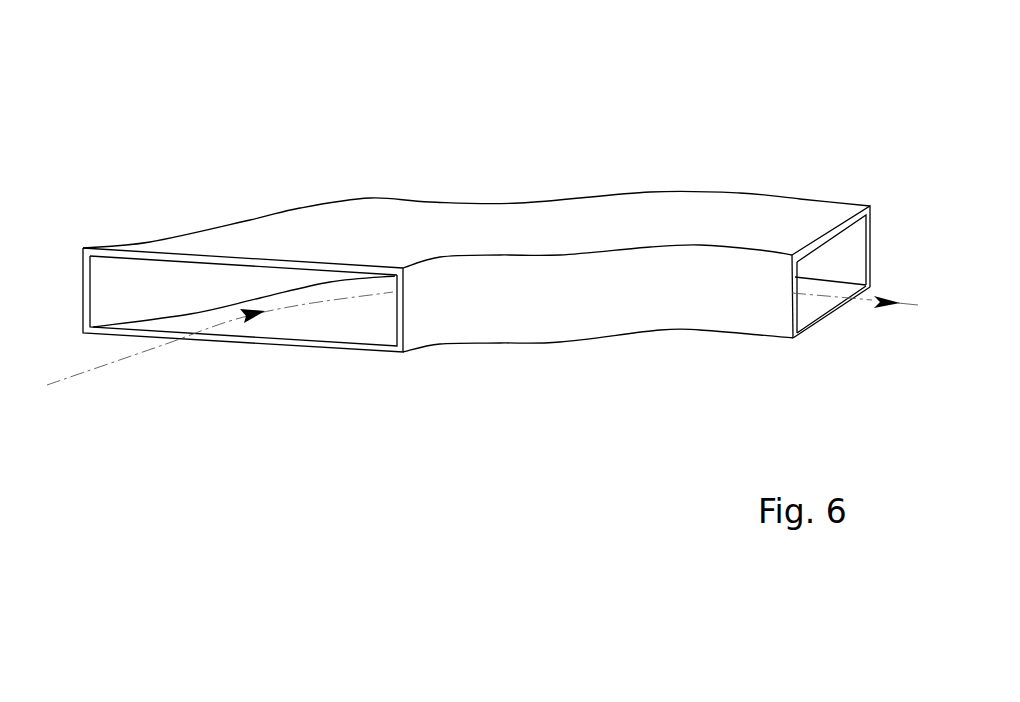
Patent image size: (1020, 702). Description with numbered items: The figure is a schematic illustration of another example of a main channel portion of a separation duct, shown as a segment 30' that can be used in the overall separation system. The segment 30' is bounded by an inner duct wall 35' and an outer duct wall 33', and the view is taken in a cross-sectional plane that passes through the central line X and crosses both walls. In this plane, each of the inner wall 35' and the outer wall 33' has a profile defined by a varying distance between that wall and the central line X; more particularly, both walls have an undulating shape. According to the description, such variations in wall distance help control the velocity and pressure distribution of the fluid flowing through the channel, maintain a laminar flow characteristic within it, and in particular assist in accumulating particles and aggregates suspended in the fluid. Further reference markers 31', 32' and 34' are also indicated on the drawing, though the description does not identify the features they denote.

The segment 30' is at (473, 233).
The flow channel 31' is at (479, 334).
The bottom wall 32' is at (566, 344).
The outer duct wall 33' is at (215, 300).
The top wall 34' is at (476, 226).
The inner duct wall 35' is at (600, 316).
The central line X is at (100, 365).